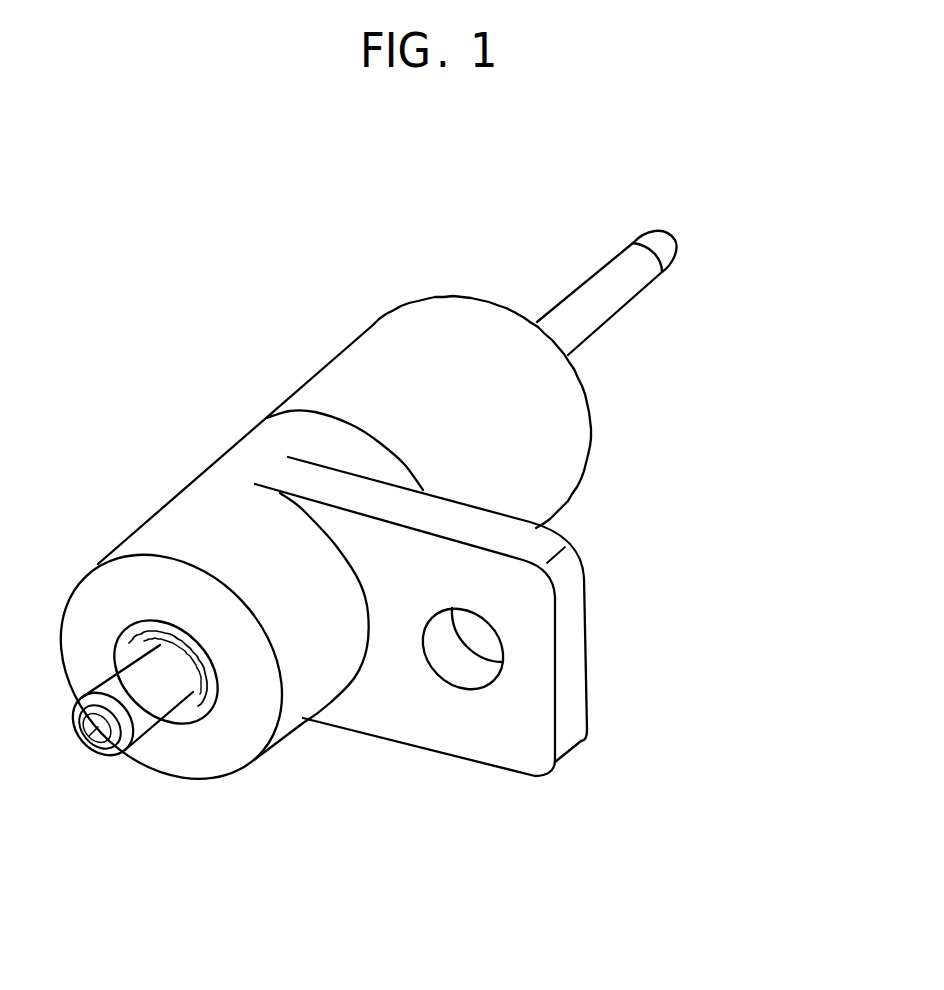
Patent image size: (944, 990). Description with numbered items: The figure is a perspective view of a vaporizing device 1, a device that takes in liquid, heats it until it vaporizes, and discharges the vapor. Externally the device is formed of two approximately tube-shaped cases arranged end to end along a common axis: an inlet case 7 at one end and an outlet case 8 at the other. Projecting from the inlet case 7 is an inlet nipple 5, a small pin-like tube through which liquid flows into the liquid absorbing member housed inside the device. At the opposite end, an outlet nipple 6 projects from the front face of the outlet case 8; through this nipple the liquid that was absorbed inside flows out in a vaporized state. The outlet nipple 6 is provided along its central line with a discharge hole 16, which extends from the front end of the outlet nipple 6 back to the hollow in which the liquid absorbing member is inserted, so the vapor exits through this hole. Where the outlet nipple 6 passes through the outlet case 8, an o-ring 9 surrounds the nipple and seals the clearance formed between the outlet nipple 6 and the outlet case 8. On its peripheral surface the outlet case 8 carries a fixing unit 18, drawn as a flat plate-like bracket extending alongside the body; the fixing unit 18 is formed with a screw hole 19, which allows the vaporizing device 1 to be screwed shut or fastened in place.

The vaporizing device 1 is at (772, 300).
The inlet nipple 5 is at (585, 305).
The outlet nipple 6 is at (140, 706).
The inlet case 7 is at (367, 375).
The outlet case 8 is at (203, 503).
The o-ring 9 is at (190, 715).
The discharge hole 16 is at (90, 743).
The fixing unit 18 is at (460, 630).
The screw hole 19 is at (455, 668).